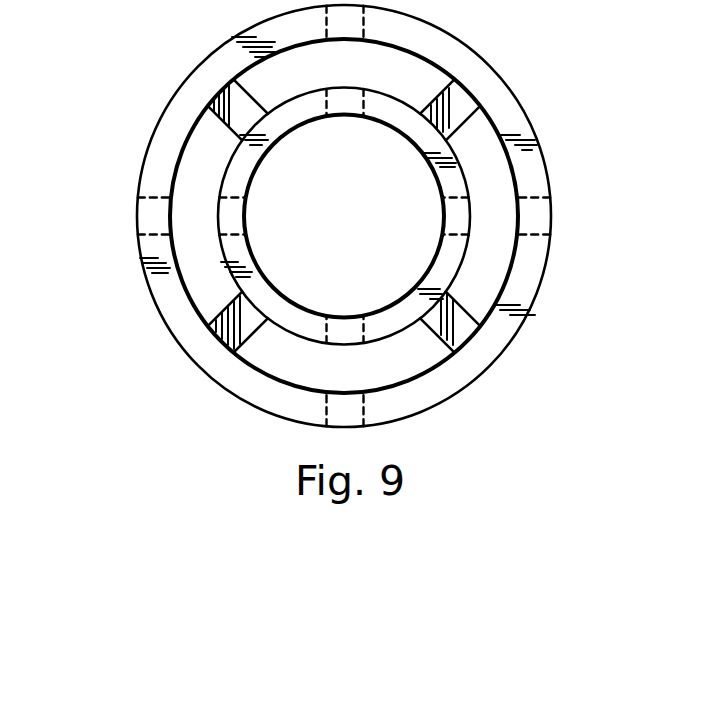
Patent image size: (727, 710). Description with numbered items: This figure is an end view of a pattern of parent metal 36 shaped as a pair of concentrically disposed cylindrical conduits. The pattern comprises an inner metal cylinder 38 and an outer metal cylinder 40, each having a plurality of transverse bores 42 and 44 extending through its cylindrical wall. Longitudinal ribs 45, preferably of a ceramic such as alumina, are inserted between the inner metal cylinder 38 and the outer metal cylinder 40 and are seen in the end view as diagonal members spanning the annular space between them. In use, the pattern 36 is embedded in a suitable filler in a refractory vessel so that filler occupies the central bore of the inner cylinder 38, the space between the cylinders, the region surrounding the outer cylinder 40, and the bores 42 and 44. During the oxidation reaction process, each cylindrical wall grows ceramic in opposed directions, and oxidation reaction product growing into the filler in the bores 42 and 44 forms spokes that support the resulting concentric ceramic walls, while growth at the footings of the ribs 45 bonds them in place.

The pattern of parent metal 36 is at (507, 60).
The inner metal cylinder 38 is at (426, 171).
The outer metal cylinder 40 is at (537, 162).
The transverse bores 42 is at (231, 211).
The transverse bores 44 is at (147, 215).
The longitudinal ribs 45 is at (251, 328).